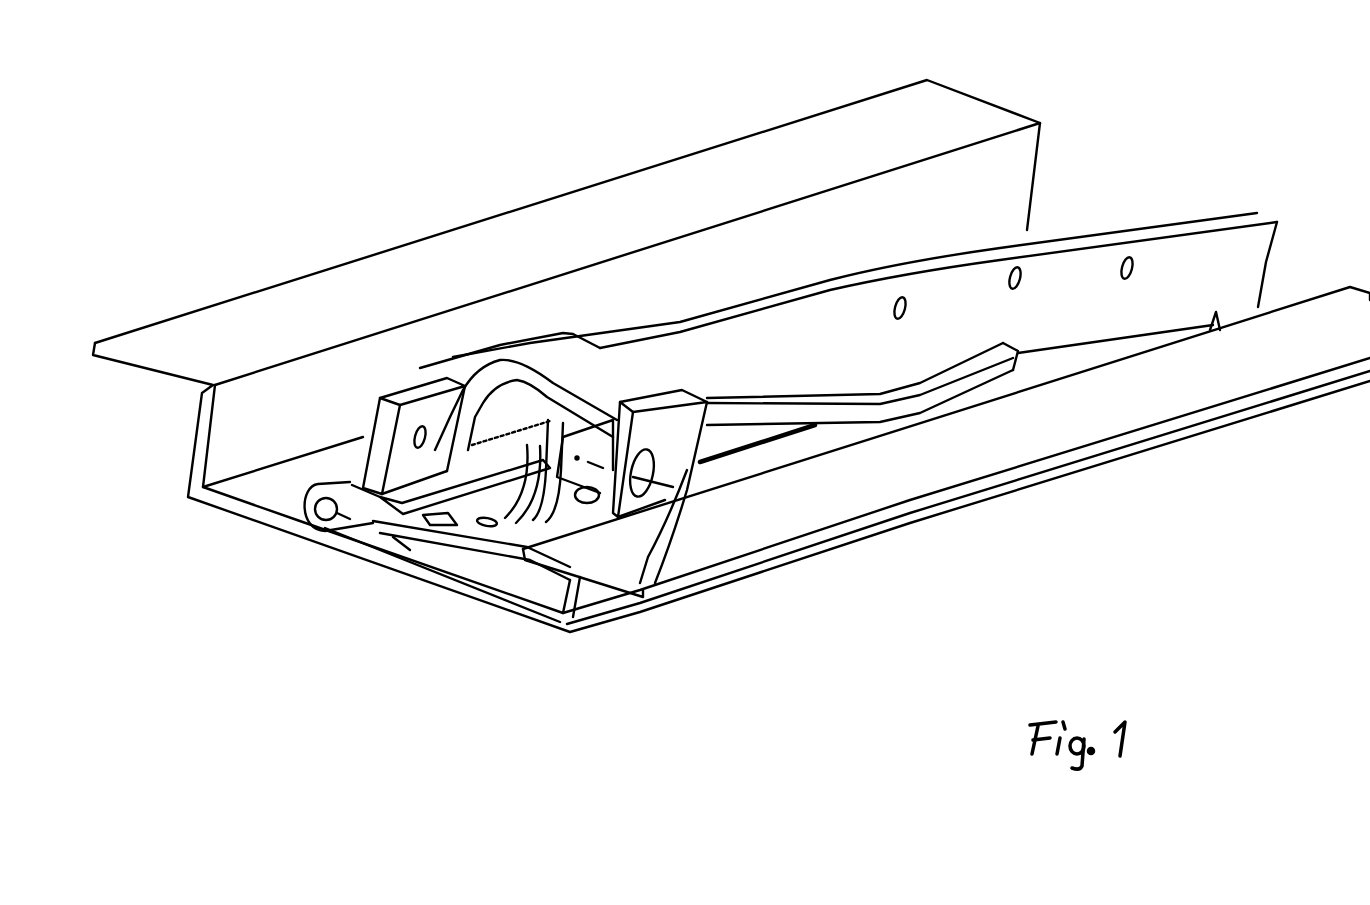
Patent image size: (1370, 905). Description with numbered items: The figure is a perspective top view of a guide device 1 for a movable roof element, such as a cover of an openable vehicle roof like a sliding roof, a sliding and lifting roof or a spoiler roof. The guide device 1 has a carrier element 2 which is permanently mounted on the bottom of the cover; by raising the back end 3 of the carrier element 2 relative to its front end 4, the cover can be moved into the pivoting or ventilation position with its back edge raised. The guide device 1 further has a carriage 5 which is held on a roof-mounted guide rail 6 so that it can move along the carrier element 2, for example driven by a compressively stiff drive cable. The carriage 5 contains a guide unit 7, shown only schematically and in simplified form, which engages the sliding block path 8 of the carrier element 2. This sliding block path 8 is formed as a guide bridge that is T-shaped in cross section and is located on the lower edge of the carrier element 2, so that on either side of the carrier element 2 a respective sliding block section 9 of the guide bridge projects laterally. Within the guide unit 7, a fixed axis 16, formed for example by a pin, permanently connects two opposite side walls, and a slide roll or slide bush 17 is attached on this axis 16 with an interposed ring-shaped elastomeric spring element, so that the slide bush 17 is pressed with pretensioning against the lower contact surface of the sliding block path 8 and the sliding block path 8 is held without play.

The guide device 1 is at (322, 408).
The carrier element 2 is at (805, 327).
The back end 3 is at (415, 413).
The front end 4 is at (1240, 242).
The carriage 5 is at (490, 545).
The guide rail 6 is at (367, 553).
The guide unit 7 is at (662, 494).
The sliding block path 8 is at (790, 412).
The sliding block section 9 is at (440, 375).
The axis 16 is at (650, 484).
The slide bush 17 is at (597, 475).